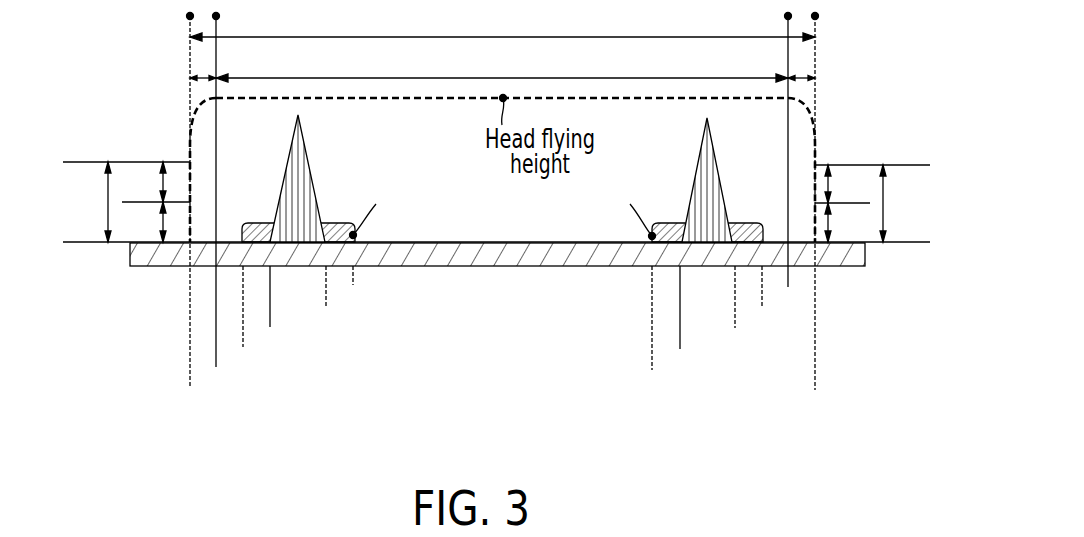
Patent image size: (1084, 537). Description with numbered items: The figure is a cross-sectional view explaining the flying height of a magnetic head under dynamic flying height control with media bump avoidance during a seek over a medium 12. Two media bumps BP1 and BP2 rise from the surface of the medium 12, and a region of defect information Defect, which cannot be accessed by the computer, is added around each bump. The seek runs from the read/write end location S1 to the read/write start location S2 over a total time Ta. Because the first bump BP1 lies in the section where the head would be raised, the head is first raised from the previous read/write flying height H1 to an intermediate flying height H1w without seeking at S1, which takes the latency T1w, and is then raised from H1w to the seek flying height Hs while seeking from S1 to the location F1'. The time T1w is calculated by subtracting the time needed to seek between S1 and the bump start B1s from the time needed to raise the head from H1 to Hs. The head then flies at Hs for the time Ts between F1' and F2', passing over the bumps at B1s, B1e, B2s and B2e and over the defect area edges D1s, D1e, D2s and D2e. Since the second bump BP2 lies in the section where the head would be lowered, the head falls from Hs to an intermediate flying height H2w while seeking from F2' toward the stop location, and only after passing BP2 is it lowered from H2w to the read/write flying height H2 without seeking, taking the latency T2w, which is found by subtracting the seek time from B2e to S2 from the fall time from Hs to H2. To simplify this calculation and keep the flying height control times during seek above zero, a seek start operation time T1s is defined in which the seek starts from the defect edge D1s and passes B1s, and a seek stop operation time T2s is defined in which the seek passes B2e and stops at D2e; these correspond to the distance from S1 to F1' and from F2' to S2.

The magnetic recording medium (substrate) 12 is at (130, 252).
The media bump BP1 is at (312, 181).
The media bump BP2 is at (694, 183).
The defect Defect is at (503, 208).
The flying height for seek Hs is at (463, 98).
The read/write end location S1 is at (190, 387).
The read/write start location S2 is at (815, 390).
The location F1' is at (227, 222).
The location F2' is at (797, 182).
The defect area edge D1s is at (243, 347).
The defect area edge D1e is at (353, 285).
The media bump location B1s is at (270, 327).
The media bump location B1e is at (326, 307).
The defect area edge D2s is at (652, 370).
The defect area edge D2e is at (762, 308).
The media bump location B2s is at (680, 349).
The media bump location B2e is at (735, 328).
The time Ta is at (502, 23).
The time Ts is at (502, 65).
The seek start operation time T1s is at (206, 77).
The seek stop operation time T2s is at (799, 77).
The flying height H1w is at (126, 202).
The time T1w is at (153, 182).
The flying height H1 is at (147, 222).
The flying height H2w is at (872, 203).
The time T2w is at (846, 184).
The flying height for read/write H2 is at (845, 223).